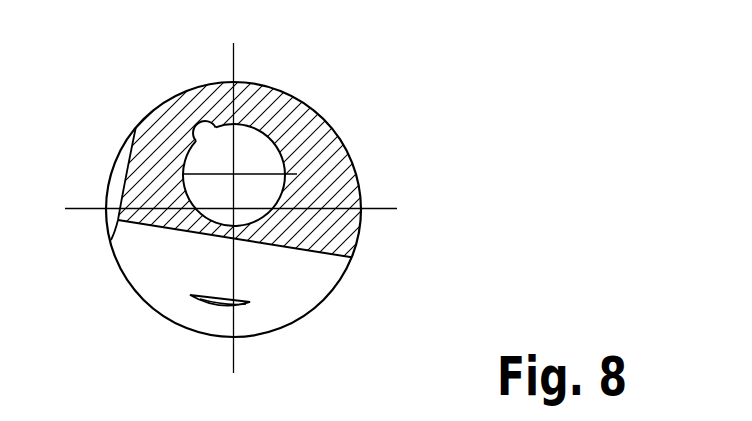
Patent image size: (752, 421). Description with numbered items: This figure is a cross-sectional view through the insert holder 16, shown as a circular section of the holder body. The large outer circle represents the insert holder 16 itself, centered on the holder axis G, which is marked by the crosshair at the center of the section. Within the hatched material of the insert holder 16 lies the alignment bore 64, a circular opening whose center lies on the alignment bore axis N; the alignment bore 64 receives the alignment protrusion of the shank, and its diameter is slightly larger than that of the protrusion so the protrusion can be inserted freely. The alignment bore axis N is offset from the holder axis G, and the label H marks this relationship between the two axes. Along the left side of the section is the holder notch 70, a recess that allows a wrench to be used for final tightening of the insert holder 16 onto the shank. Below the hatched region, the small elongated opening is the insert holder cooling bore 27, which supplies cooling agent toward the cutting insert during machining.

The insert holder 16 is at (368, 92).
The insert holder cooling bore 27 is at (208, 306).
The alignment bore 64 is at (192, 142).
The holder notch 70 is at (125, 168).
The alignment bore axis N is at (234, 176).
The horizontal offset H is at (234, 210).
The holder axis G is at (235, 207).